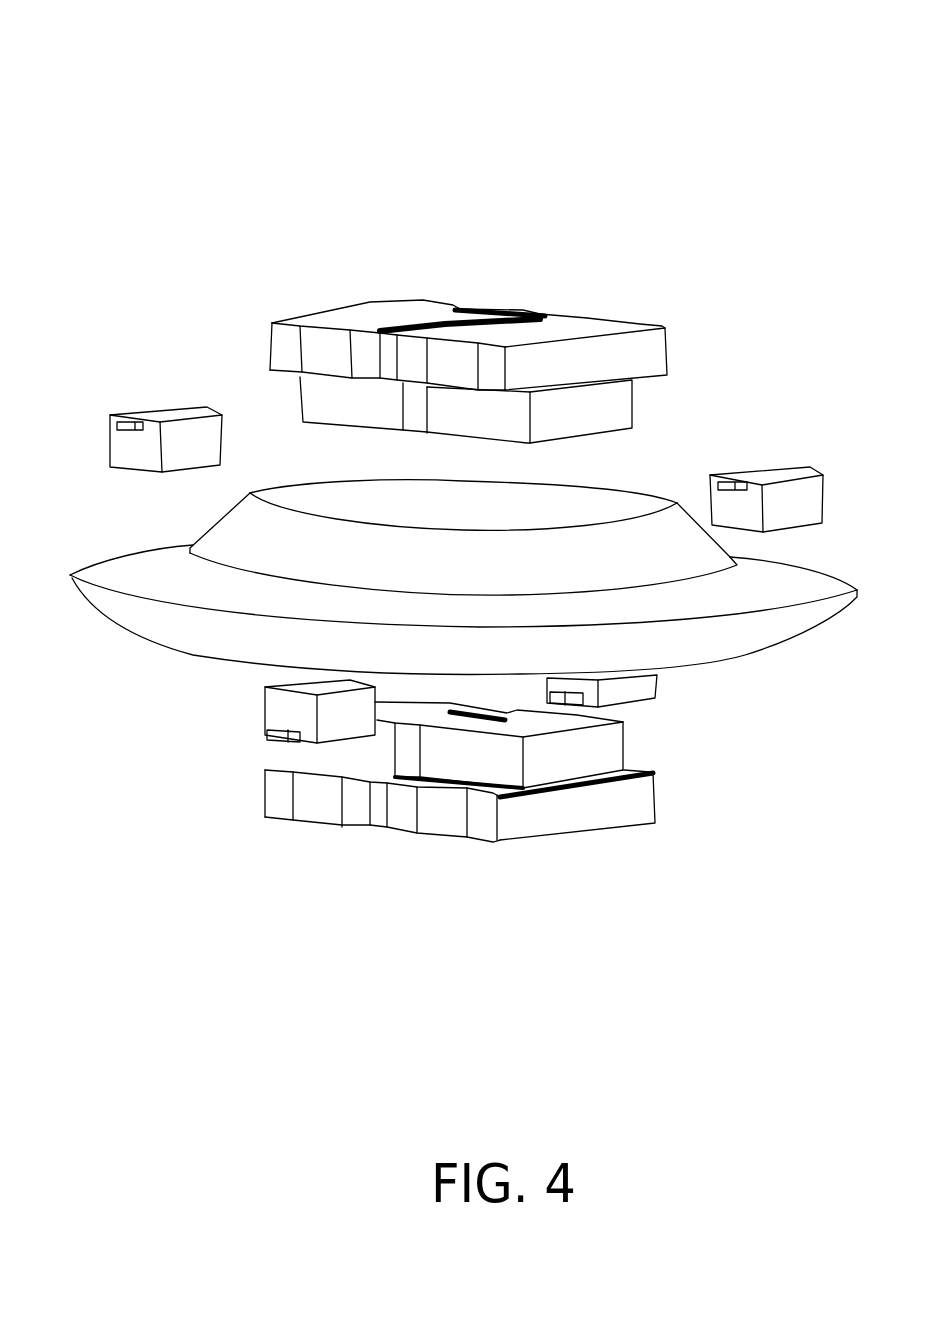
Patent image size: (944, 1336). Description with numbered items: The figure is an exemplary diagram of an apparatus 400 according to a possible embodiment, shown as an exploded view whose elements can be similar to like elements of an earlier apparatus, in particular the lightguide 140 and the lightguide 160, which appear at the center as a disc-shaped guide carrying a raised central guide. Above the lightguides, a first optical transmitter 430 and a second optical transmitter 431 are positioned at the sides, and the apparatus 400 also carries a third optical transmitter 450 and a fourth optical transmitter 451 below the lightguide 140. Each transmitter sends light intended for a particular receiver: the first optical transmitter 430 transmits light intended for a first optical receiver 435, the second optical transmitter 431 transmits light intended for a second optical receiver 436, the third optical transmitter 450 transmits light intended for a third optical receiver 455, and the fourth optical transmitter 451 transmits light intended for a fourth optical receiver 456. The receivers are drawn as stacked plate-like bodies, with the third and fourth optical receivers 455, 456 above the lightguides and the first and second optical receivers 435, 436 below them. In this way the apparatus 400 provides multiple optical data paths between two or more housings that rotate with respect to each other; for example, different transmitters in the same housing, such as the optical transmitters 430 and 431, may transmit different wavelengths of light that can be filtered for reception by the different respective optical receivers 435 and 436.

The apparatus 400 is at (792, 47).
The lightguide 140 is at (128, 637).
The lightguide 160 is at (573, 481).
The third optical receiver 455 is at (363, 307).
The fourth optical receiver 456 is at (657, 327).
The second optical transmitter 431 is at (125, 468).
The first optical transmitter 430 is at (810, 472).
The third optical transmitter 450 is at (657, 698).
The fourth optical transmitter 451 is at (267, 740).
The second optical receiver 436 is at (340, 825).
The first optical receiver 435 is at (523, 833).